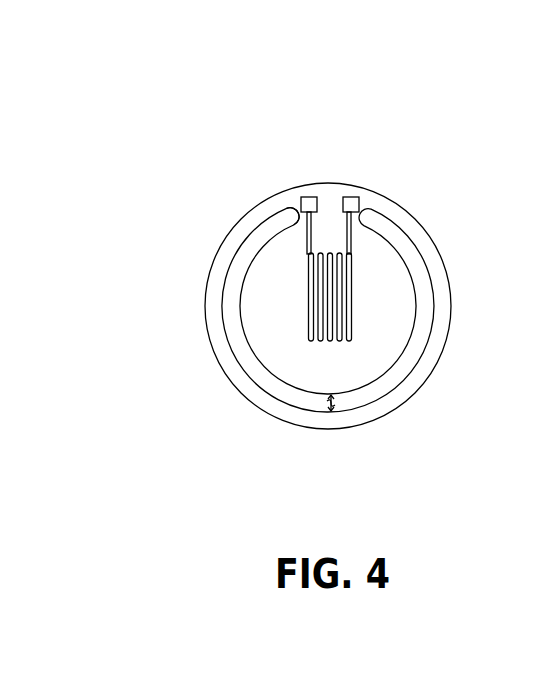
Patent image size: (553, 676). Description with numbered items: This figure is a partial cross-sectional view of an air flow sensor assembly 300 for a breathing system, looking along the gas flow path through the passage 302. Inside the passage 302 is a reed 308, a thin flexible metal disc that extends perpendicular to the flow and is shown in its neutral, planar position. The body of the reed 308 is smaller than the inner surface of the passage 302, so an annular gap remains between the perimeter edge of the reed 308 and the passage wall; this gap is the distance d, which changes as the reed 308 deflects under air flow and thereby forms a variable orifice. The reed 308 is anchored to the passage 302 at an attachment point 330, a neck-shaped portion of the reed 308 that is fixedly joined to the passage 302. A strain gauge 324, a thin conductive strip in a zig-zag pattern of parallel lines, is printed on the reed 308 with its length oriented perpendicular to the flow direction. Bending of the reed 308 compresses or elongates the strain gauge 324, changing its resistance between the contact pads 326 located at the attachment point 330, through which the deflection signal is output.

The air flow sensor assembly 300 is at (477, 51).
The passage 302 is at (420, 222).
The reed 308 is at (352, 408).
The strain gauge 324 is at (352, 298).
The contact pads 326 is at (348, 197).
The attachment point 330 is at (290, 212).
The distance d is at (333, 405).